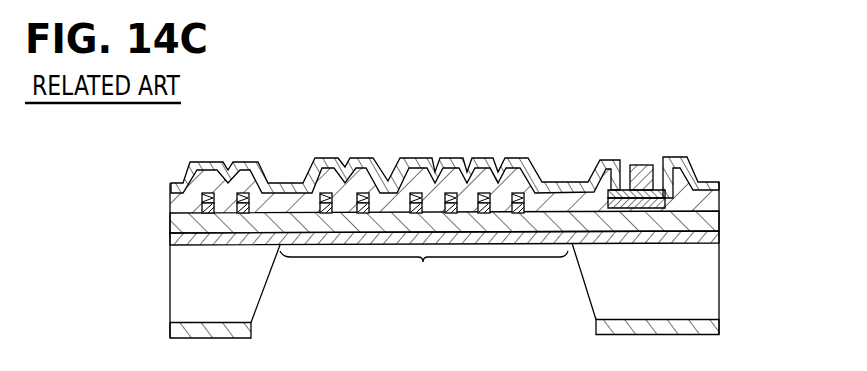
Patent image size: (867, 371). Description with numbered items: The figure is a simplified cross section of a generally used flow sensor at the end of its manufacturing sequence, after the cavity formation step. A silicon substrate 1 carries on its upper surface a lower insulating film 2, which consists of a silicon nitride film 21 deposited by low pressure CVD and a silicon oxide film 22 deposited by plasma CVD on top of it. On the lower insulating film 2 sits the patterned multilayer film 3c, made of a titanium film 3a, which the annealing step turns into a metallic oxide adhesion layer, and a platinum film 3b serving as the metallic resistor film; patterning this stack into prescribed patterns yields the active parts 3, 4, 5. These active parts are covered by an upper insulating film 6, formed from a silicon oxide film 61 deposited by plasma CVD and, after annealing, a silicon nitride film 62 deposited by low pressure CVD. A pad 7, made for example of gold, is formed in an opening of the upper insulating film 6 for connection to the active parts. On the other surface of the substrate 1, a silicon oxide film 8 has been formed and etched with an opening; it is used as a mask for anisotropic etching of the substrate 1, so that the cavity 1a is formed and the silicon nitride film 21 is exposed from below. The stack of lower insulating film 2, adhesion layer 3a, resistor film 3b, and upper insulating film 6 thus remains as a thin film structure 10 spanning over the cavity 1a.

The silicon substrate 1 is at (471, 276).
The cavity 1a is at (323, 304).
The lower insulating film 2 is at (487, 241).
The silicon nitride film 21 is at (714, 238).
The silicon oxide film 22 is at (712, 220).
The active part 3 is at (323, 172).
The titanium film 3a is at (203, 209).
The platinum film 3b is at (203, 196).
The multilayer film 3c is at (676, 160).
The active part 4 is at (360, 193).
The active part 5 is at (417, 193).
The upper insulating film 6 is at (487, 184).
The silicon oxide film 61 is at (712, 196).
The silicon nitride film 62 is at (720, 185).
The pad 7 is at (638, 165).
The silicon oxide film 8 is at (717, 327).
The thin film structure 10 is at (424, 271).